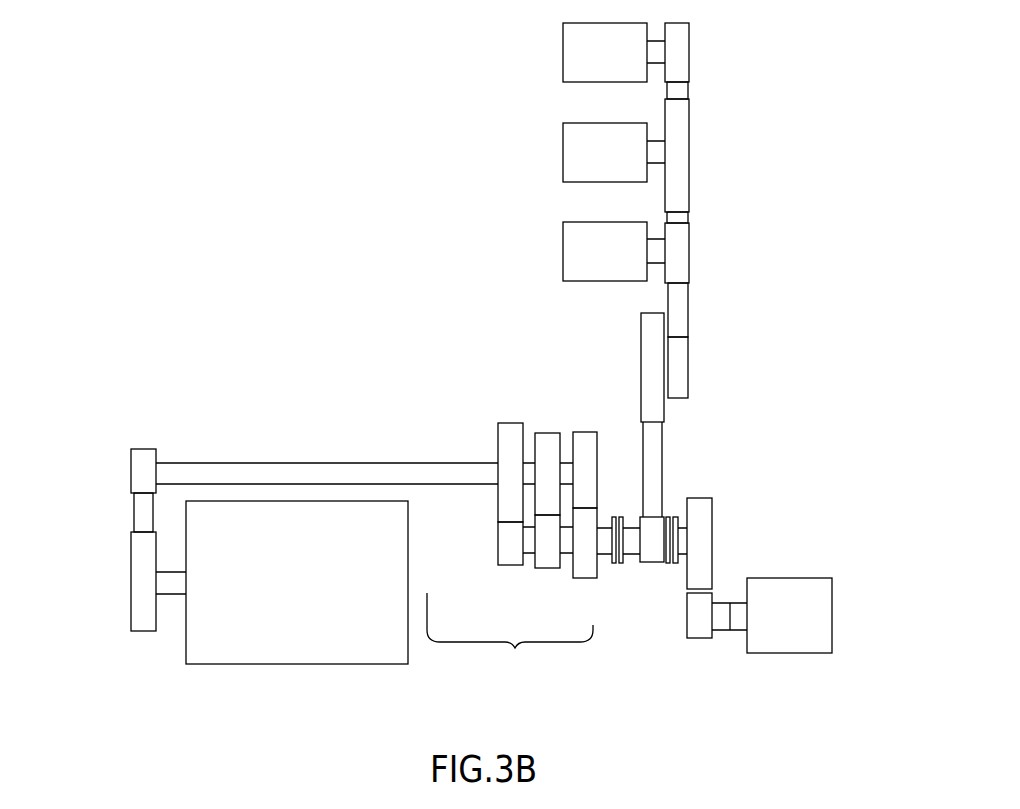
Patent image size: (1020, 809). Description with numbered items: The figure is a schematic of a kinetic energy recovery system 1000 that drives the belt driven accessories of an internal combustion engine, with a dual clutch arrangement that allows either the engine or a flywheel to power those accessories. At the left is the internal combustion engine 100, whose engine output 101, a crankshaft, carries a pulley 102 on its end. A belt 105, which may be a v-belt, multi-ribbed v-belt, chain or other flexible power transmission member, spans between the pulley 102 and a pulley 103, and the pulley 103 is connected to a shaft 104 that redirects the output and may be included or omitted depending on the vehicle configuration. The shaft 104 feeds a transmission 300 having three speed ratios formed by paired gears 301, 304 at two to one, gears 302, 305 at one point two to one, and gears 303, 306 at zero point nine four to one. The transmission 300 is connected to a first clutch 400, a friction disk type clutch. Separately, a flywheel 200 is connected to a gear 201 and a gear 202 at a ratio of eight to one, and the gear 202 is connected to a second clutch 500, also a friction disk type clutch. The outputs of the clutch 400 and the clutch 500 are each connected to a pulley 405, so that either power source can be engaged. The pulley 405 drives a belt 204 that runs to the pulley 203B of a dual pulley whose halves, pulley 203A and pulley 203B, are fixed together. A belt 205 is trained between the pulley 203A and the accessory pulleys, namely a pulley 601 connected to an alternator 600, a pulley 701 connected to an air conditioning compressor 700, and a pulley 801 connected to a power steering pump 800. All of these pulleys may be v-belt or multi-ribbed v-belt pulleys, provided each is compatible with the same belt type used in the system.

The system 1000 is at (385, 163).
The internal combustion engine 100 is at (408, 542).
The engine output 101 is at (172, 595).
The pulley 102 is at (131, 577).
The pulley 103 is at (131, 477).
The shaft 104 is at (265, 462).
The belt 105 is at (134, 516).
The flywheel 200 is at (783, 653).
The gear 201 is at (698, 628).
The gear 202 is at (713, 540).
The pulley 203A is at (676, 373).
The pulley 203B is at (645, 336).
The belt 204 is at (660, 440).
The belt 205 is at (690, 292).
The transmission 300 is at (512, 652).
The gear 301 is at (510, 566).
The gear 302 is at (545, 568).
The gear 303 is at (586, 578).
The gear 304 is at (502, 424).
The gear 305 is at (540, 432).
The gear 306 is at (583, 432).
The first clutch 400 is at (612, 565).
The pulley 405 is at (647, 525).
The second clutch 500 is at (668, 516).
The alternator 600 is at (562, 245).
The pulley 601 is at (690, 234).
The air conditioning compressor 700 is at (562, 167).
The pulley 701 is at (690, 157).
The power steering pump 800 is at (562, 67).
The pulley 801 is at (690, 55).